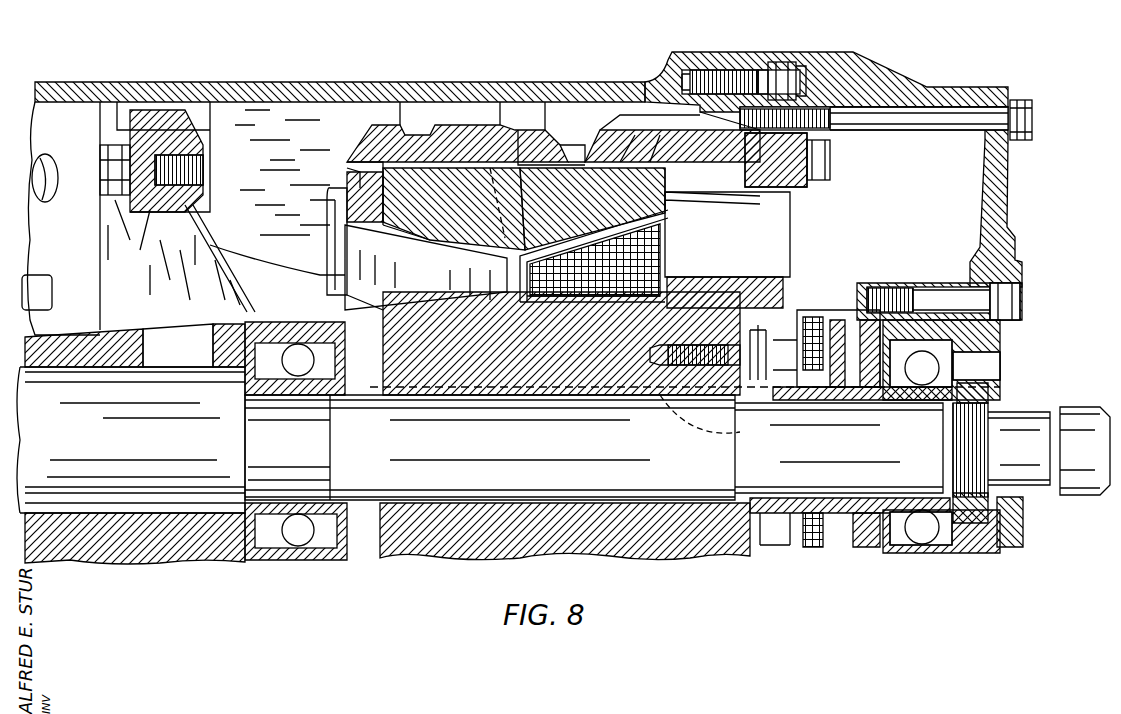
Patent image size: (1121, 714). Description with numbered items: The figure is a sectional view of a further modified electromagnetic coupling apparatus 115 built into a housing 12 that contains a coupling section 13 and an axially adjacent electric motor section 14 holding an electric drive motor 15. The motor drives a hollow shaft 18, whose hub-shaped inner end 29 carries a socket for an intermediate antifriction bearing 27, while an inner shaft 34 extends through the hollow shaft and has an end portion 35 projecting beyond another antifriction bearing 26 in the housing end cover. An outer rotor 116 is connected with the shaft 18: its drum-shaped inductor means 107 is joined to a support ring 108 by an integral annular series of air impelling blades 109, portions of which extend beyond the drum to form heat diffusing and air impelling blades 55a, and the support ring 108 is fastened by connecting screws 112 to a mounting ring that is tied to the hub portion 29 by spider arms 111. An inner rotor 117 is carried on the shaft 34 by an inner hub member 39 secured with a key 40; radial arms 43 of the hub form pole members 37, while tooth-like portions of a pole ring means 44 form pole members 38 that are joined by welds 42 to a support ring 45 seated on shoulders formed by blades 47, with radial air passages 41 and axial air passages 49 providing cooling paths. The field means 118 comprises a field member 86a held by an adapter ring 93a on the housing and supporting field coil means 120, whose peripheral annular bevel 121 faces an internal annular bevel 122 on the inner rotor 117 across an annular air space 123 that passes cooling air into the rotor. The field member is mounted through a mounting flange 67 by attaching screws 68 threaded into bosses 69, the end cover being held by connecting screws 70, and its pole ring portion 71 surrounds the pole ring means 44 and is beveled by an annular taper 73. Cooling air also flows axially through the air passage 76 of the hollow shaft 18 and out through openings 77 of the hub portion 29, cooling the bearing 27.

The electric motor section 14 is at (48, 90).
The housing 12 is at (283, 84).
The connecting screws 70 is at (925, 112).
The bosses 69 is at (710, 58).
The mounting flange 67 is at (768, 57).
The attaching screws 68 is at (795, 75).
The drum-shaped inductor means 107 is at (470, 118).
The coupling section 13 is at (495, 100).
The outer rotor 116 is at (505, 118).
The heat diffusing and air impelling blades 55a is at (545, 125).
The inner rotor 117 is at (550, 125).
The pole ring means 44 is at (597, 140).
The annular taper 73 is at (628, 150).
The pole ring portion 71 is at (650, 160).
The field means 118 is at (725, 135).
The adapter ring 93a is at (820, 140).
The electromagnetic coupling apparatus 115 is at (395, 110).
The internal annular bevel 122 is at (538, 250).
The pole members 38 is at (551, 147).
The pole members 37 is at (390, 160).
The axial air passages 49 is at (410, 285).
The radial air passages 41 is at (445, 242).
The shaft 34 is at (440, 545).
The peripheral annular bevel 121 is at (580, 235).
The field coil means 120 is at (660, 245).
The annular air space 123 is at (660, 210).
The field member 86a is at (778, 226).
The support ring 108 is at (170, 112).
The connecting screws 112 is at (140, 205).
The air impelling blades 109 is at (285, 100).
The hub-shaped inner end 29 is at (285, 320).
The support ring 45 is at (345, 208).
The welds 42 is at (350, 175).
The radial arms 43 is at (345, 250).
The blades 47 is at (345, 287).
The electric drive motor 15 is at (50, 188).
The spider arms 111 is at (112, 258).
The shaft 18 is at (112, 328).
The openings 77 is at (180, 325).
The air passage 76 is at (65, 378).
The inner hub member 39 is at (518, 405).
The end portion 35 is at (1090, 418).
The key 40 is at (705, 430).
The antifriction bearing 26 is at (918, 380).
The antifriction bearing 27 is at (293, 540).